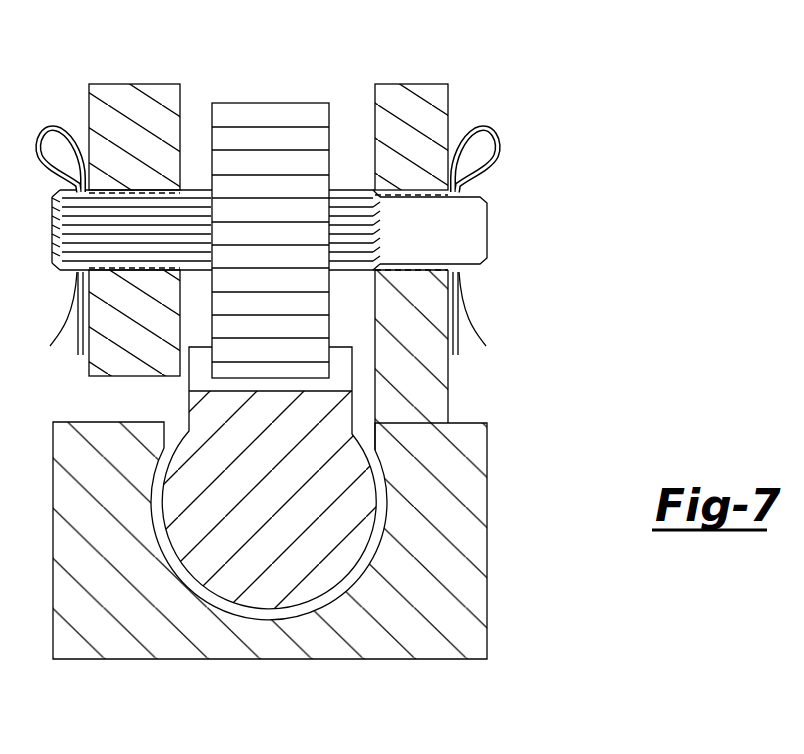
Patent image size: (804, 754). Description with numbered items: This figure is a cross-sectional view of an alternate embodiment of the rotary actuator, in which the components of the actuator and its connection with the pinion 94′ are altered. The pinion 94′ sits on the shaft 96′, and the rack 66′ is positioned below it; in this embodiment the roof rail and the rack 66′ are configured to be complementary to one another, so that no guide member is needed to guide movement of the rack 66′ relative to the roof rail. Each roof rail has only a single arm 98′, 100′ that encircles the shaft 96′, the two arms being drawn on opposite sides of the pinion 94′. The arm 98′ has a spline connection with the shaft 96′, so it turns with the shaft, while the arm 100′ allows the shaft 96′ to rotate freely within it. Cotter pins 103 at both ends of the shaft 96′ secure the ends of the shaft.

The rack 66′ is at (272, 560).
The pinion 94′ is at (278, 112).
The shaft 96′ is at (60, 213).
The arm 98′ is at (122, 88).
The arm 100′ is at (416, 90).
The cotter pins 103 is at (498, 152).